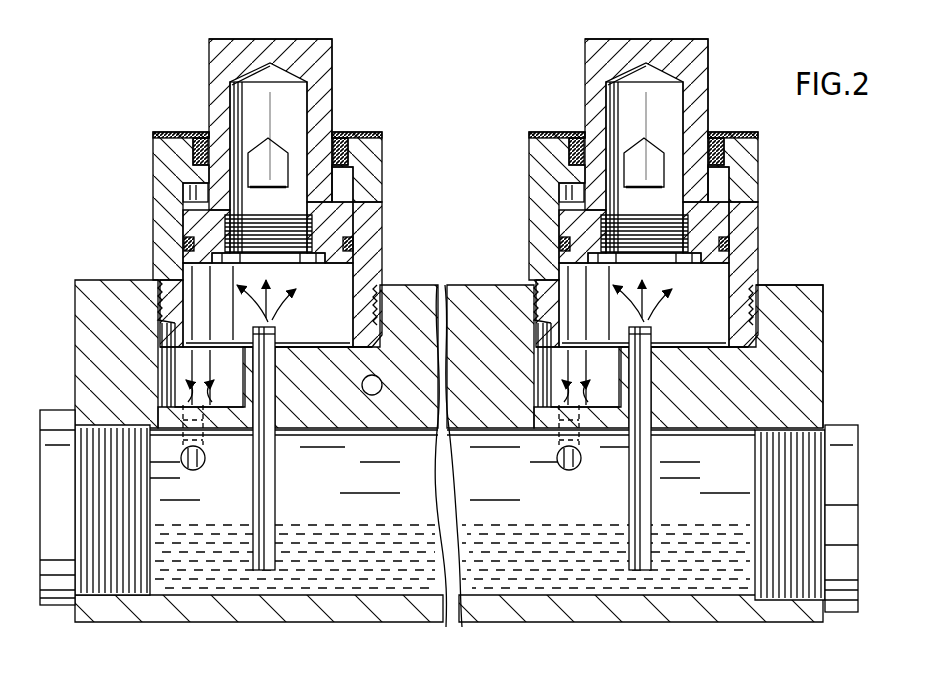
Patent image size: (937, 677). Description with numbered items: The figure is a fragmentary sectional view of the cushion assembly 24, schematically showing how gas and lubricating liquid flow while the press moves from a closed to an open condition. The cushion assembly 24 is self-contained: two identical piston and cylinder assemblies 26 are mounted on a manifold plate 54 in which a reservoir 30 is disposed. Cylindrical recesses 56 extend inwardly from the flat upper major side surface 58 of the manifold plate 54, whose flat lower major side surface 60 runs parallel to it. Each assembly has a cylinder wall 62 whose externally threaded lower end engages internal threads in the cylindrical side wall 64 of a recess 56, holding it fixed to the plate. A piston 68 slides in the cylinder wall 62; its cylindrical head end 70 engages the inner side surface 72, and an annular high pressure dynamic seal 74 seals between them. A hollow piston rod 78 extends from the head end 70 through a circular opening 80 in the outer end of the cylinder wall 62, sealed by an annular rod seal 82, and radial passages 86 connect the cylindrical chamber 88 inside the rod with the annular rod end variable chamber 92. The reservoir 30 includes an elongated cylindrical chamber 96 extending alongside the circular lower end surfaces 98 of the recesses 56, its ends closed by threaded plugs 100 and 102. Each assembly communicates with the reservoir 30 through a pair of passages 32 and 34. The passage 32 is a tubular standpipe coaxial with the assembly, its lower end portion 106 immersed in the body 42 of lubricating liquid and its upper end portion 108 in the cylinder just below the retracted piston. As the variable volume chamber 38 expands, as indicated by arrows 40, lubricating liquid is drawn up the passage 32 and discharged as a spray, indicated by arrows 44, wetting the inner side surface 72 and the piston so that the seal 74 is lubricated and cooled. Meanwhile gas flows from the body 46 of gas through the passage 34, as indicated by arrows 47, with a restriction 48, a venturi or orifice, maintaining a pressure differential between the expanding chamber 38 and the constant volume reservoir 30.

The cushion assembly 24 is at (830, 225).
The piston and cylinder assembly 26 is at (393, 86).
The reservoir 30 is at (862, 517).
The passage 32 is at (280, 392).
The passage 34 is at (194, 472).
The variable volume chamber 38 is at (350, 266).
The arrows 40 is at (276, 160).
The body of lubricating liquid 42 is at (507, 580).
The arrows 44 is at (297, 305).
The body of gas 46 is at (412, 466).
The arrows 47 is at (198, 395).
The restriction 48 is at (185, 452).
The manifold plate 54 is at (830, 318).
The cylindrical recess 56 is at (180, 370).
The upper major side surface 58 is at (480, 288).
The lower major side surface 60 is at (212, 624).
The cylinder wall 62 is at (367, 192).
The cylindrical side wall 64 is at (378, 385).
The piston 68 is at (206, 86).
The head end 70 is at (346, 219).
The inner side surface 72 is at (178, 276).
The high pressure dynamic seal 74 is at (188, 243).
The piston rod 78 is at (322, 80).
The circular opening 80 is at (200, 165).
The rod seal 82 is at (340, 140).
The radial passage 86 is at (195, 197).
The cylindrical chamber 88 is at (268, 98).
The rod end variable chamber 92 is at (348, 186).
The cylindrical chamber 96 is at (737, 450).
The lower end surface 98 is at (290, 455).
The threaded plug 100 is at (56, 580).
The threaded plug 102 is at (842, 602).
The lower end portion 106 is at (264, 568).
The upper end portion 108 is at (270, 332).